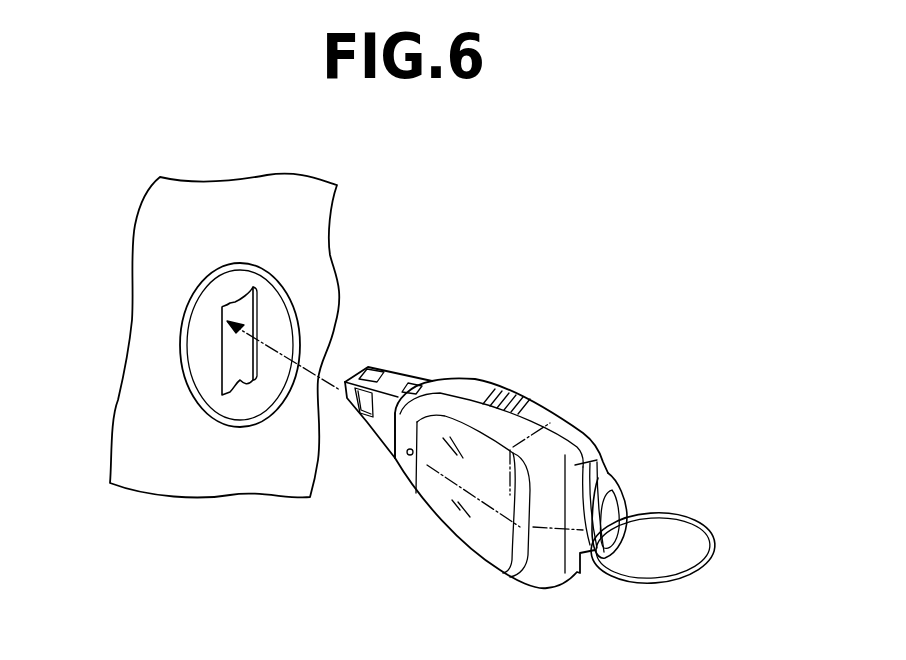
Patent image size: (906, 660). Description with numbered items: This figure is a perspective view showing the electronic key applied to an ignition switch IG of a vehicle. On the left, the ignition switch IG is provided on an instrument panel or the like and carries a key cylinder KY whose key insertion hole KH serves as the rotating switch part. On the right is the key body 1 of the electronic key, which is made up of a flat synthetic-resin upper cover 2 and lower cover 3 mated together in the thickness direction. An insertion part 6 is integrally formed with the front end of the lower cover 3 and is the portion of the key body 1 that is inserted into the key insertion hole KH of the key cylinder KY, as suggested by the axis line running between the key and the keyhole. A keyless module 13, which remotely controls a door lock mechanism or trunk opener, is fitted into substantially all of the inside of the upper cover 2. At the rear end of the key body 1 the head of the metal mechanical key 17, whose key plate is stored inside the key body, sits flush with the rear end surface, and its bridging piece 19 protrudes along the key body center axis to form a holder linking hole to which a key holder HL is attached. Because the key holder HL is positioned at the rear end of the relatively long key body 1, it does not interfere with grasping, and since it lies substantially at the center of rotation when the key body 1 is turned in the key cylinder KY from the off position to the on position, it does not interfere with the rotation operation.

The key body 1 is at (518, 382).
The upper cover 2 is at (405, 465).
The lower cover 3 is at (552, 413).
The insertion part 6 is at (398, 374).
The keyless module 13 is at (489, 520).
The mechanical key 17 is at (612, 478).
The bridging piece 19 is at (623, 513).
The key holder HL is at (715, 543).
The ignition switch IG is at (298, 242).
The key cylinder KY is at (197, 335).
The key insertion hole KH is at (248, 380).